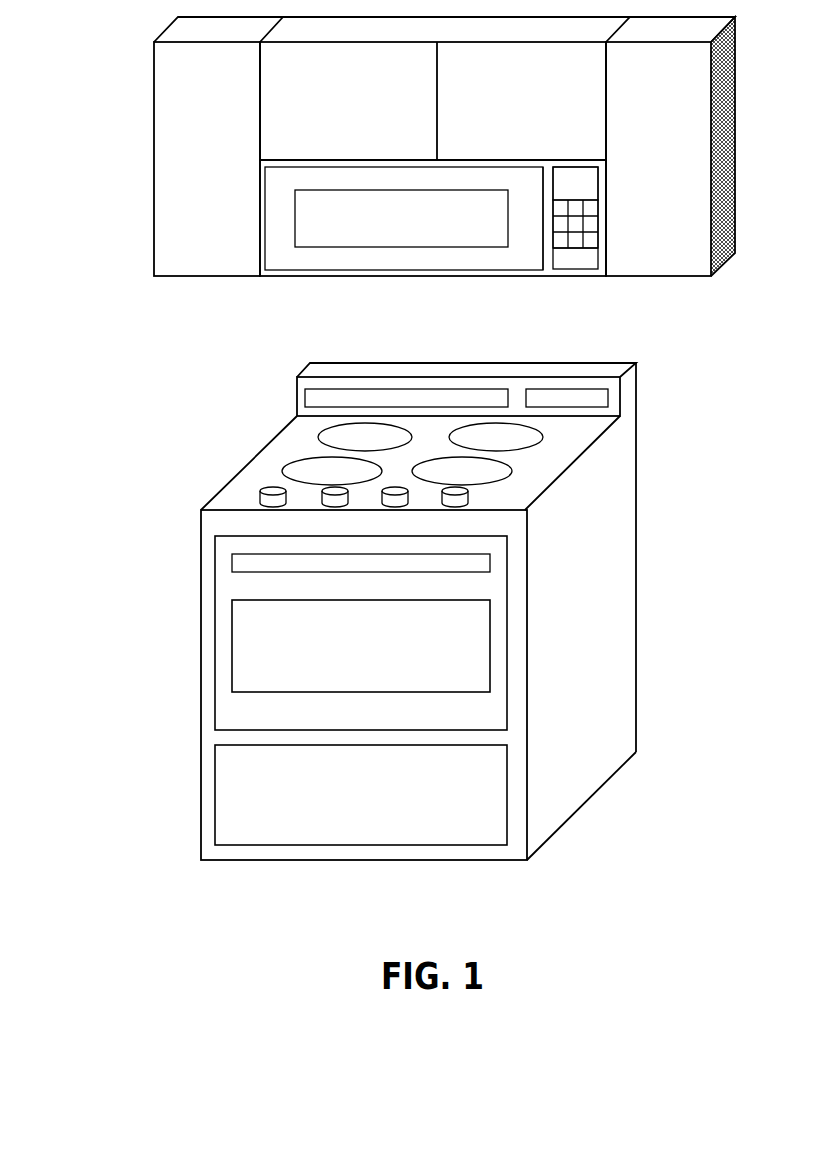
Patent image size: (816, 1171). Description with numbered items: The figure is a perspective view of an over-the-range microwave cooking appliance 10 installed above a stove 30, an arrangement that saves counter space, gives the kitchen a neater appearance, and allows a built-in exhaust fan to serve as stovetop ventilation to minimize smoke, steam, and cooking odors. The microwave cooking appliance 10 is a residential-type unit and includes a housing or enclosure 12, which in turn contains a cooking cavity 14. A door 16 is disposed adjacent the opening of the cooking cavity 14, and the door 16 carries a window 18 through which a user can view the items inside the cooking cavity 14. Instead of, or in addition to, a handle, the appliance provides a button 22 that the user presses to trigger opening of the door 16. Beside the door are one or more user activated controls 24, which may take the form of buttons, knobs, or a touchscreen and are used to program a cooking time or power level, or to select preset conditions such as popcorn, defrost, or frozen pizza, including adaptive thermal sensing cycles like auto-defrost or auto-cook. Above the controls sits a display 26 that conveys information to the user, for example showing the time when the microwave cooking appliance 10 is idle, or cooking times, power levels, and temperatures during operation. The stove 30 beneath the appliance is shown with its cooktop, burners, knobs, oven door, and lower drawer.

The over-the-range microwave cooking appliance 10 is at (128, 156).
The housing or enclosure 12 is at (284, 273).
The cooking cavity 14 is at (420, 230).
The door 16 is at (518, 258).
The window 18 is at (308, 213).
The button 22 is at (585, 257).
The user activated controls 24 is at (588, 222).
The display 26 is at (567, 178).
The stove 30 is at (170, 473).